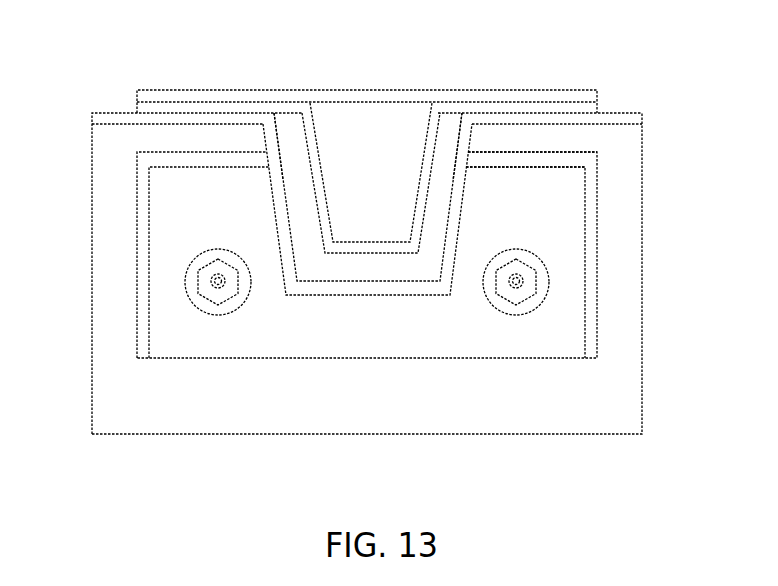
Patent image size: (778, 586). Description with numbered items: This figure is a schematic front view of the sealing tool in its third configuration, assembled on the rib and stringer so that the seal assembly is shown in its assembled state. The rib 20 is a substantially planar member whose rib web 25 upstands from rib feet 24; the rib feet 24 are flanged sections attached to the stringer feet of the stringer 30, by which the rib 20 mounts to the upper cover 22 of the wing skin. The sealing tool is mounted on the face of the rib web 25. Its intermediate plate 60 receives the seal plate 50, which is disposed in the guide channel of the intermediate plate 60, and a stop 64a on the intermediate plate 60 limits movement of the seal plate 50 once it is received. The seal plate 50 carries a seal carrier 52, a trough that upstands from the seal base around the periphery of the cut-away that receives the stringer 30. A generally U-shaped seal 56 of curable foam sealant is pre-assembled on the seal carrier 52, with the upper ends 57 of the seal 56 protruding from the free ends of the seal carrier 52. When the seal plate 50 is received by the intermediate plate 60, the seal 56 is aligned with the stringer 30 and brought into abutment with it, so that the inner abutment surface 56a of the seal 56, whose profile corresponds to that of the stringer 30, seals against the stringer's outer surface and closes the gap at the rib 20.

The rib 20 is at (100, 265).
The upper cover 22 is at (373, 103).
The rib feet 24 is at (628, 117).
The rib web 25 is at (250, 418).
The stringer 30 is at (507, 113).
The seal plate 50 is at (542, 343).
The seal carrier 52 is at (388, 288).
The seal 56 is at (447, 195).
The inner abutment surface 56a is at (418, 195).
The upper ends 57 is at (287, 125).
The intermediate plate 60 is at (595, 243).
The stop 64a is at (543, 160).